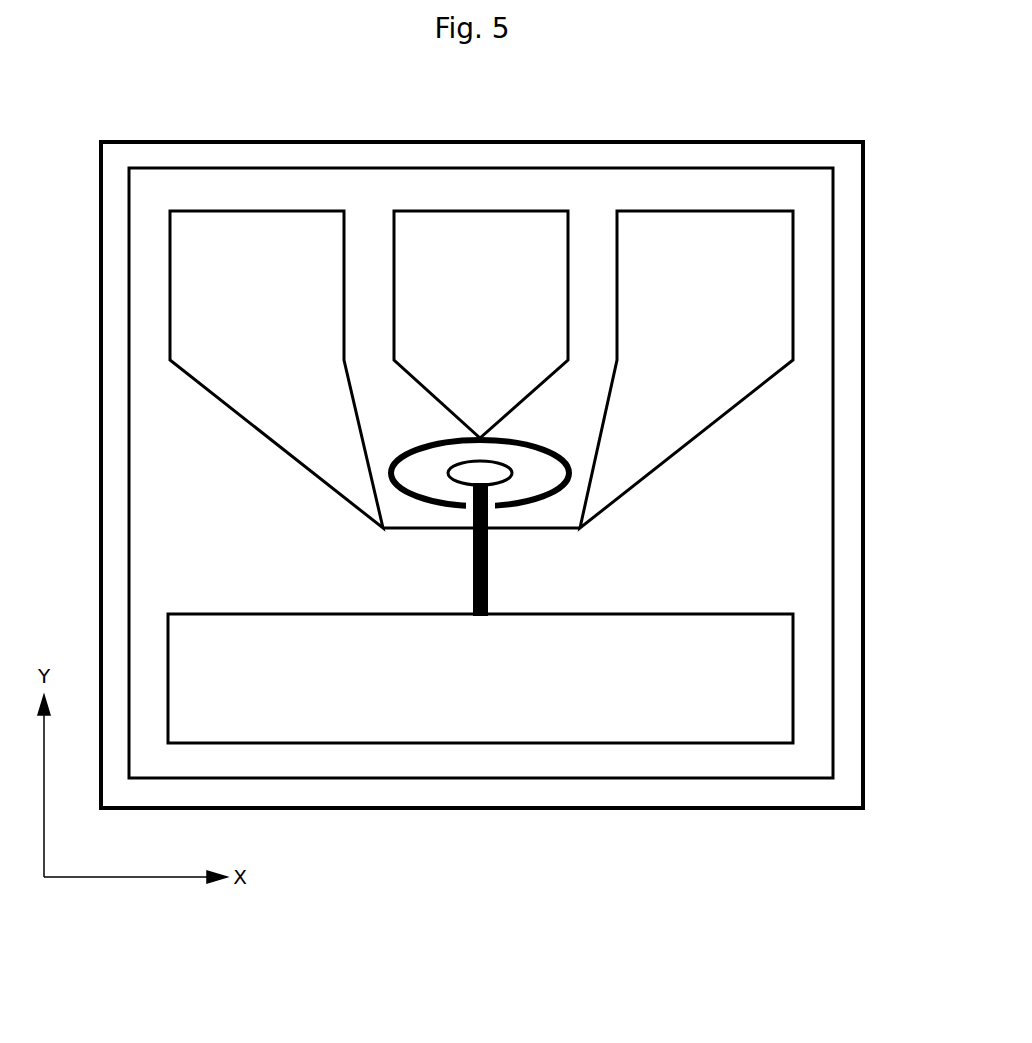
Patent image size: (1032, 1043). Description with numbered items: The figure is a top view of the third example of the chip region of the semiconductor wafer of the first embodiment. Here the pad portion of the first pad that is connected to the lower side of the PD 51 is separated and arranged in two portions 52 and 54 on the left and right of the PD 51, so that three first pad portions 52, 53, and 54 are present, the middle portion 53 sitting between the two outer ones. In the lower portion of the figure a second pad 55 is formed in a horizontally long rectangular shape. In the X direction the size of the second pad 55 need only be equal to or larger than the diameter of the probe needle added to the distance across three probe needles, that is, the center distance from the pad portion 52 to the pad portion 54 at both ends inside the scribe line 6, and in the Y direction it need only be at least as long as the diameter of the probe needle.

The scribe line 6 is at (835, 142).
The PD 51 is at (530, 446).
The first pad portion 52 is at (250, 211).
The first pad portion 53 is at (476, 211).
The first pad portion 54 is at (700, 211).
The second pad 55 is at (793, 680).